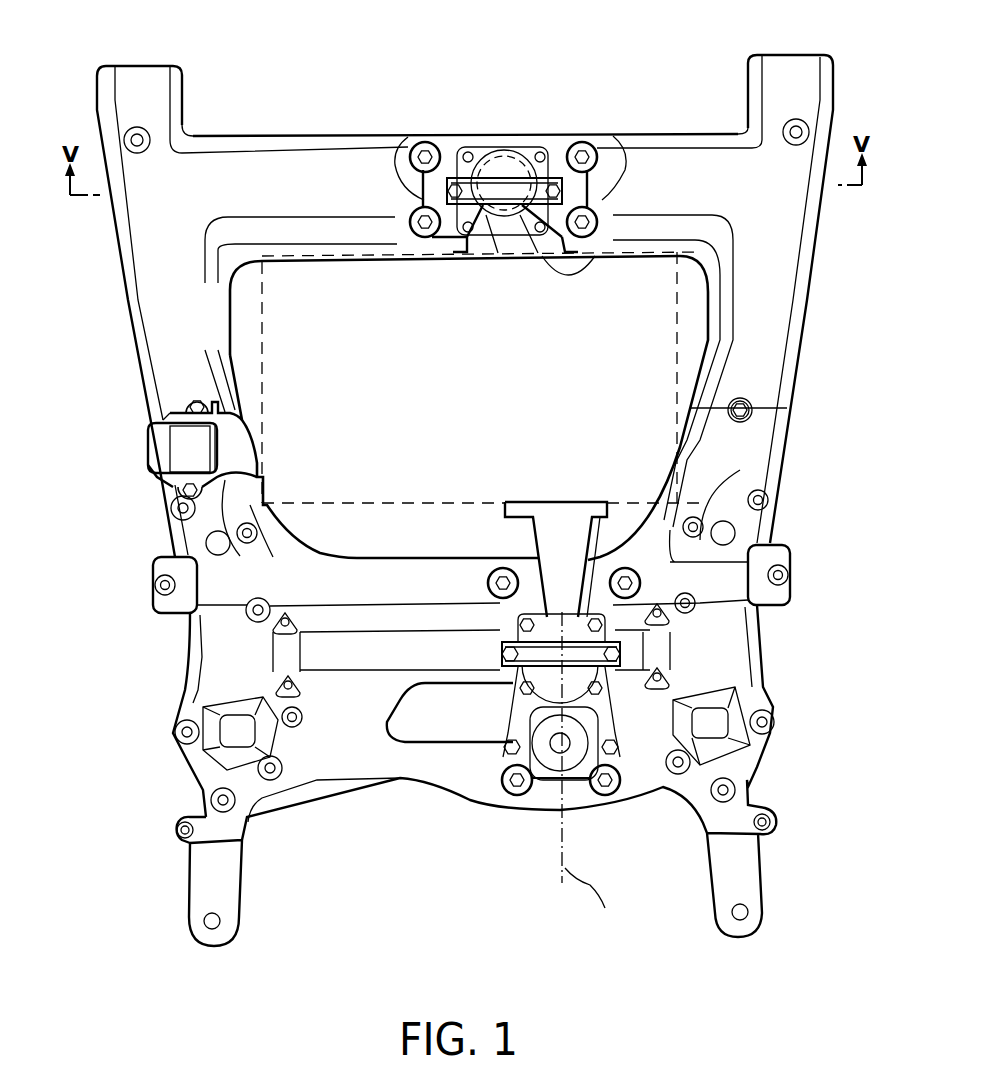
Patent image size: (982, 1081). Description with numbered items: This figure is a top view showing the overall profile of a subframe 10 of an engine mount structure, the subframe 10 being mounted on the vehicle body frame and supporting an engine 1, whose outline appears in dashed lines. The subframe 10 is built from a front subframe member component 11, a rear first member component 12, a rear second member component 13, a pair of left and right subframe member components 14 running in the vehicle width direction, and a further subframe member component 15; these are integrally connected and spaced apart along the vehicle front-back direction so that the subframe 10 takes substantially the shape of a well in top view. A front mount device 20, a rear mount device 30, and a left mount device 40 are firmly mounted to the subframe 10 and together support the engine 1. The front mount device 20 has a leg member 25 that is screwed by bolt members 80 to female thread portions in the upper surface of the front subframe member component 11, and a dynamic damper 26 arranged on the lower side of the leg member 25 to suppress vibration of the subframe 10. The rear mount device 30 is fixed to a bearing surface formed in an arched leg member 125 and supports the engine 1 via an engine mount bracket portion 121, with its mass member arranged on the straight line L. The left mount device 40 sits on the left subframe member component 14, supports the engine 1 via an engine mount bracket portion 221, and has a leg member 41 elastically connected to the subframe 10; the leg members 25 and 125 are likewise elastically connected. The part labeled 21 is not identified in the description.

The engine 1 is at (287, 257).
The subframe 10 is at (351, 134).
The front subframe member component 11 is at (313, 177).
The rear first member component 12 is at (387, 575).
The rear second member component 13 is at (398, 797).
The subframe member component 14 is at (180, 347).
The subframe member component 15 is at (760, 340).
The front mount device 20 is at (473, 141).
The bracket lower portion 21 is at (545, 270).
The leg member 25 is at (522, 141).
The dynamic damper 26 is at (507, 163).
The rear mount device 30 is at (508, 702).
The left mount device 40 is at (144, 452).
The leg member 41 is at (163, 477).
The bolt member 80 is at (410, 148).
The engine mount bracket portion 121 is at (557, 546).
The leg member 125 is at (640, 618).
The engine mount bracket portion 221 is at (163, 487).